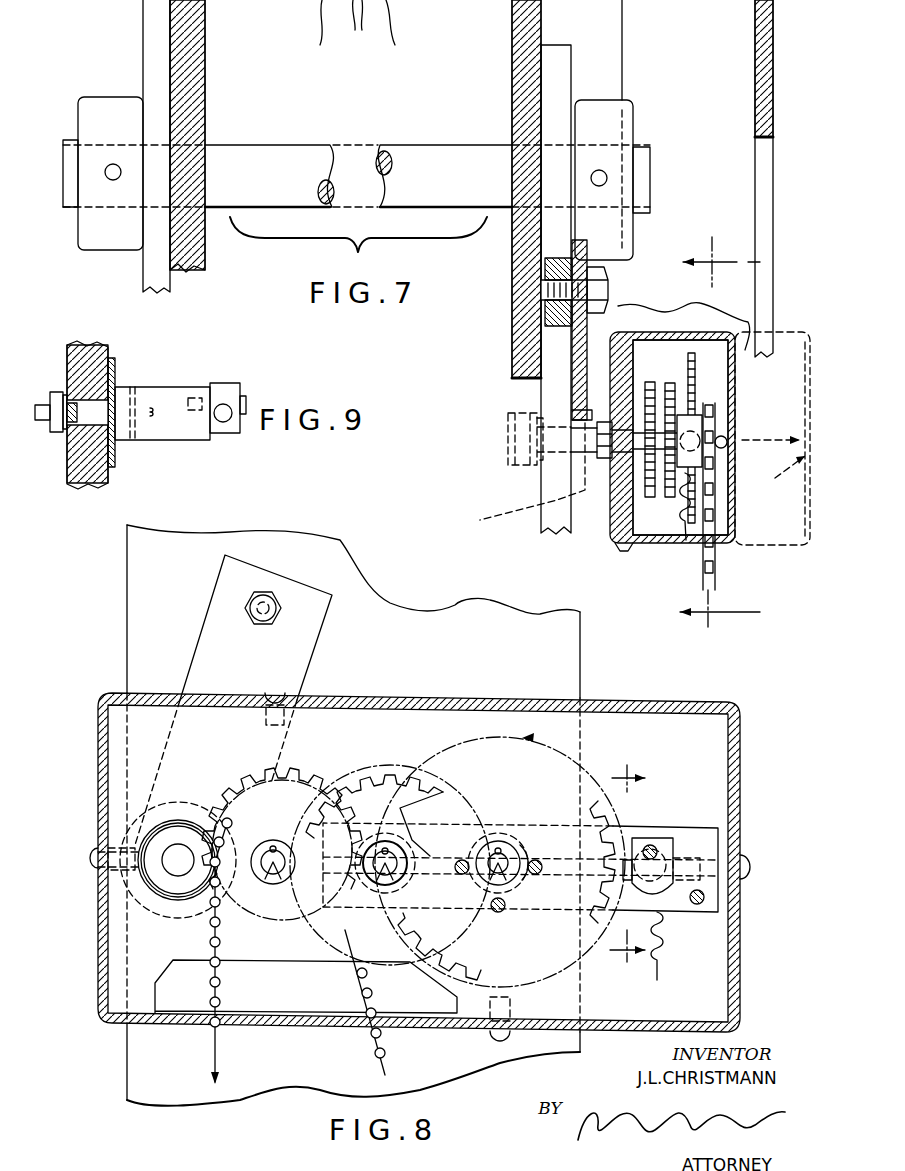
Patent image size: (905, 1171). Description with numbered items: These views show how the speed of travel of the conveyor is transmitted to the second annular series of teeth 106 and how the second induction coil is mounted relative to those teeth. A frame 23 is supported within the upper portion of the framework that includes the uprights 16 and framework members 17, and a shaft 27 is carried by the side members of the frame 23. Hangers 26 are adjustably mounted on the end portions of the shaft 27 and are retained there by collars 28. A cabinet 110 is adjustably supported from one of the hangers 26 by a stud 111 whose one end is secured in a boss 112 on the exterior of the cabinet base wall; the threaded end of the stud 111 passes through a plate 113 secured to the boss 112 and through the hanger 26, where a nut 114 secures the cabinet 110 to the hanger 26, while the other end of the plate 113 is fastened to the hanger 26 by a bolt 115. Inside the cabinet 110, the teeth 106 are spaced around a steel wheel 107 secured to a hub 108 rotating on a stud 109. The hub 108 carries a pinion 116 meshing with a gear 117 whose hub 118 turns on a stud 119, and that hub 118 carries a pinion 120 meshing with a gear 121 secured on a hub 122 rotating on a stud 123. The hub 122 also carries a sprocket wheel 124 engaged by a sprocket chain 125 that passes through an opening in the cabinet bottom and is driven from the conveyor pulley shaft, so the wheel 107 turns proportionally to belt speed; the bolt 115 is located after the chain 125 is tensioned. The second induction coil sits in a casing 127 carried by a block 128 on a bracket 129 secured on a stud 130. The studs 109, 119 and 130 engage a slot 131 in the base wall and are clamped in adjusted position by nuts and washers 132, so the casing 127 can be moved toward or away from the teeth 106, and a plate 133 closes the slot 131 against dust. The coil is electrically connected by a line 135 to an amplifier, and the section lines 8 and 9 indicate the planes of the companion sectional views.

In FIG. 7, the section line 8— 8 is at (720, 435).
In FIG. 8, the section line 9— 9 is at (636, 875).
In FIG. 7, the uprights 16 is at (770, 108).
In FIG. 7, the framework members 17 is at (357, 29).
In FIG. 7, the frame 23 is at (206, 258).
In FIG. 7, the hangers 26 is at (170, 292).
In FIG. 8, the hangers 26 is at (468, 615).
In FIG. 7, the shaft 27 is at (393, 165).
In FIG. 7, the collars 28 is at (117, 238).
In FIG. 7, the second annular series of teeth 106 is at (695, 368).
In FIG. 8, the second annular series of teeth 106 is at (612, 822).
In FIG. 7, the steel wheel 107 is at (691, 353).
In FIG. 8, the steel wheel 107 is at (566, 764).
In FIG. 8, the hub 108 is at (528, 835).
In FIG. 8, the stud 109 is at (500, 830).
In FIG. 7, the cabinet 110 is at (738, 499).
In FIG. 9, the cabinet 110 is at (92, 483).
In FIG. 8, the cabinet 110 is at (742, 787).
In FIG. 7, the stud 111 is at (505, 438).
In FIG. 8, the stud 111 is at (178, 877).
In FIG. 7, the boss 112 is at (601, 405).
In FIG. 7, the plate 113 is at (592, 330).
In FIG. 8, the plate 113 is at (292, 665).
In FIG. 7, the nut 114 is at (520, 463).
In FIG. 8, the nut 114 is at (165, 886).
In FIG. 7, the bolt 115 is at (598, 287).
In FIG. 8, the bolt 115 is at (270, 598).
In FIG. 8, the pinion 116 is at (494, 890).
In FIG. 7, the gear 117 is at (651, 381).
In FIG. 8, the gear 117 is at (420, 775).
In FIG. 8, the hub 118 is at (432, 955).
In FIG. 8, the stud 119 is at (396, 852).
In FIG. 8, the pinion 120 is at (380, 890).
In FIG. 7, the gear 121 is at (668, 498).
In FIG. 8, the gear 121 is at (292, 763).
In FIG. 7, the hub 122 is at (698, 420).
In FIG. 7, the stud 123 is at (600, 460).
In FIG. 8, the stud 123 is at (274, 874).
In FIG. 7, the sprocket wheel 124 is at (716, 393).
In FIG. 8, the sprocket wheel 124 is at (222, 920).
In FIG. 7, the sprocket chain 125 is at (718, 580).
In FIG. 8, the sprocket chain 125 is at (222, 1052).
In FIG. 9, the casing 127 is at (226, 422).
In FIG. 8, the casing 127 is at (612, 870).
In FIG. 9, the block 128 is at (225, 390).
In FIG. 8, the block 128 is at (660, 840).
In FIG. 9, the bracket 129 is at (172, 393).
In FIG. 9, the stud 130 is at (92, 410).
In FIG. 9, the slot 131 is at (85, 428).
In FIG. 8, the slot 131 is at (560, 912).
In FIG. 9, the nuts and washers 132 is at (57, 395).
In FIG. 9, the plate 133 is at (112, 462).
In FIG. 8, the plate 133 is at (680, 902).
In FIG. 7, the line 135 is at (688, 542).
In FIG. 8, the line 135 is at (660, 972).